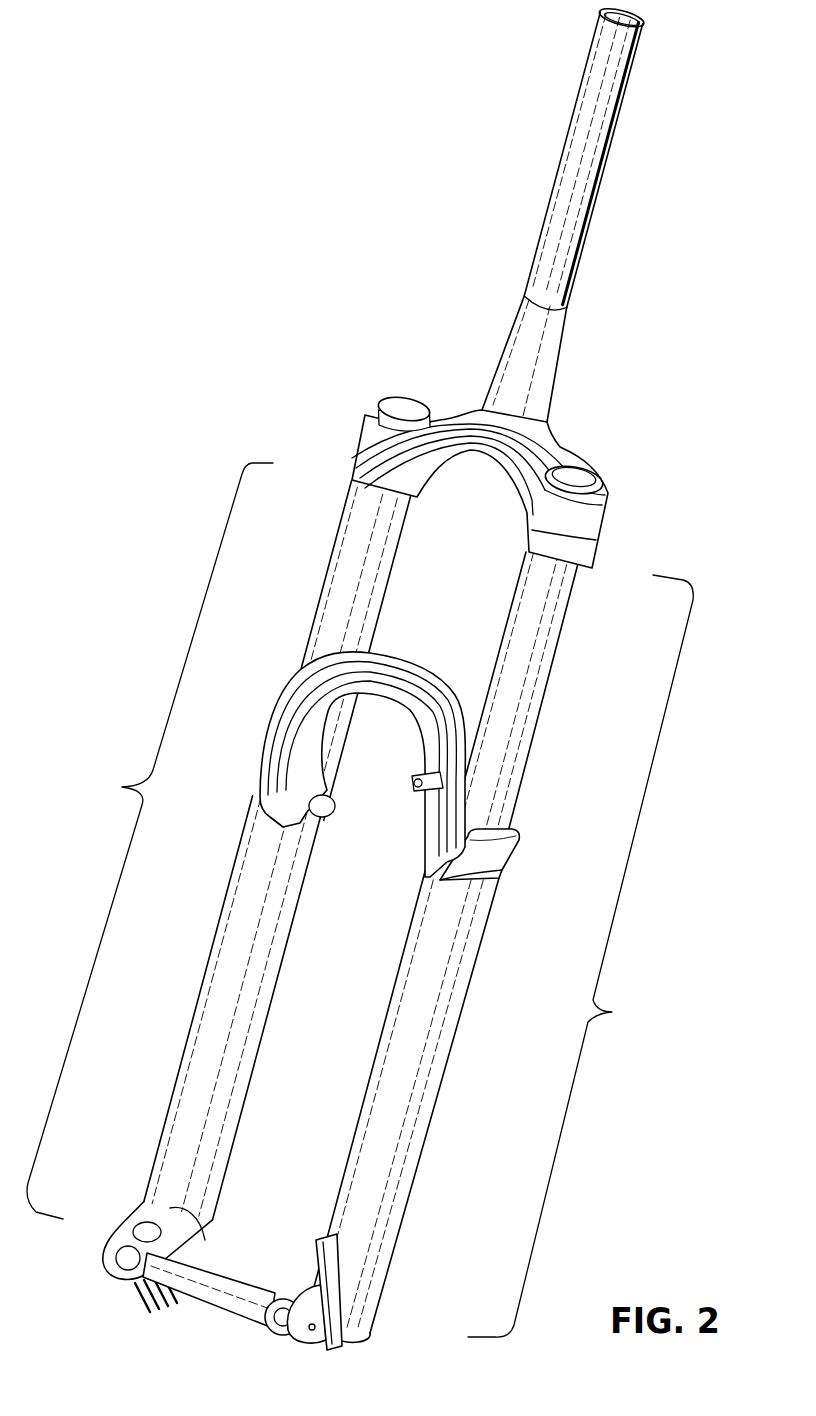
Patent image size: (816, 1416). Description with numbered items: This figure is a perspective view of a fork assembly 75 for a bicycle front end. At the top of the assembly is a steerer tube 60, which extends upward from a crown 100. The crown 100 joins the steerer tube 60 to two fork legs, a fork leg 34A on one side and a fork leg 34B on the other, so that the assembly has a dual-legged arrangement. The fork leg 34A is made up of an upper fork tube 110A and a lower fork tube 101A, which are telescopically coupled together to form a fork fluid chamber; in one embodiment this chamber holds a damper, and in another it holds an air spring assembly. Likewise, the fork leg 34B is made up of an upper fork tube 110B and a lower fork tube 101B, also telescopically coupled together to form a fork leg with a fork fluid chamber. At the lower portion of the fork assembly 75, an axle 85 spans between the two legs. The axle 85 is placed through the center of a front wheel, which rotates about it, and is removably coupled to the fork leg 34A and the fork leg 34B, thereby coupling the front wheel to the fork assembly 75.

The fork assembly 75 is at (407, 76).
The steerer tube 60 is at (573, 186).
The crown 100 is at (372, 470).
The upper fork tube 110A is at (340, 612).
The upper fork tube 110B is at (528, 702).
The lower fork tube 101A is at (205, 1110).
The lower fork tube 101B is at (430, 1066).
The fork leg 34A is at (150, 841).
The fork leg 34B is at (580, 956).
The axle 85 is at (218, 1290).